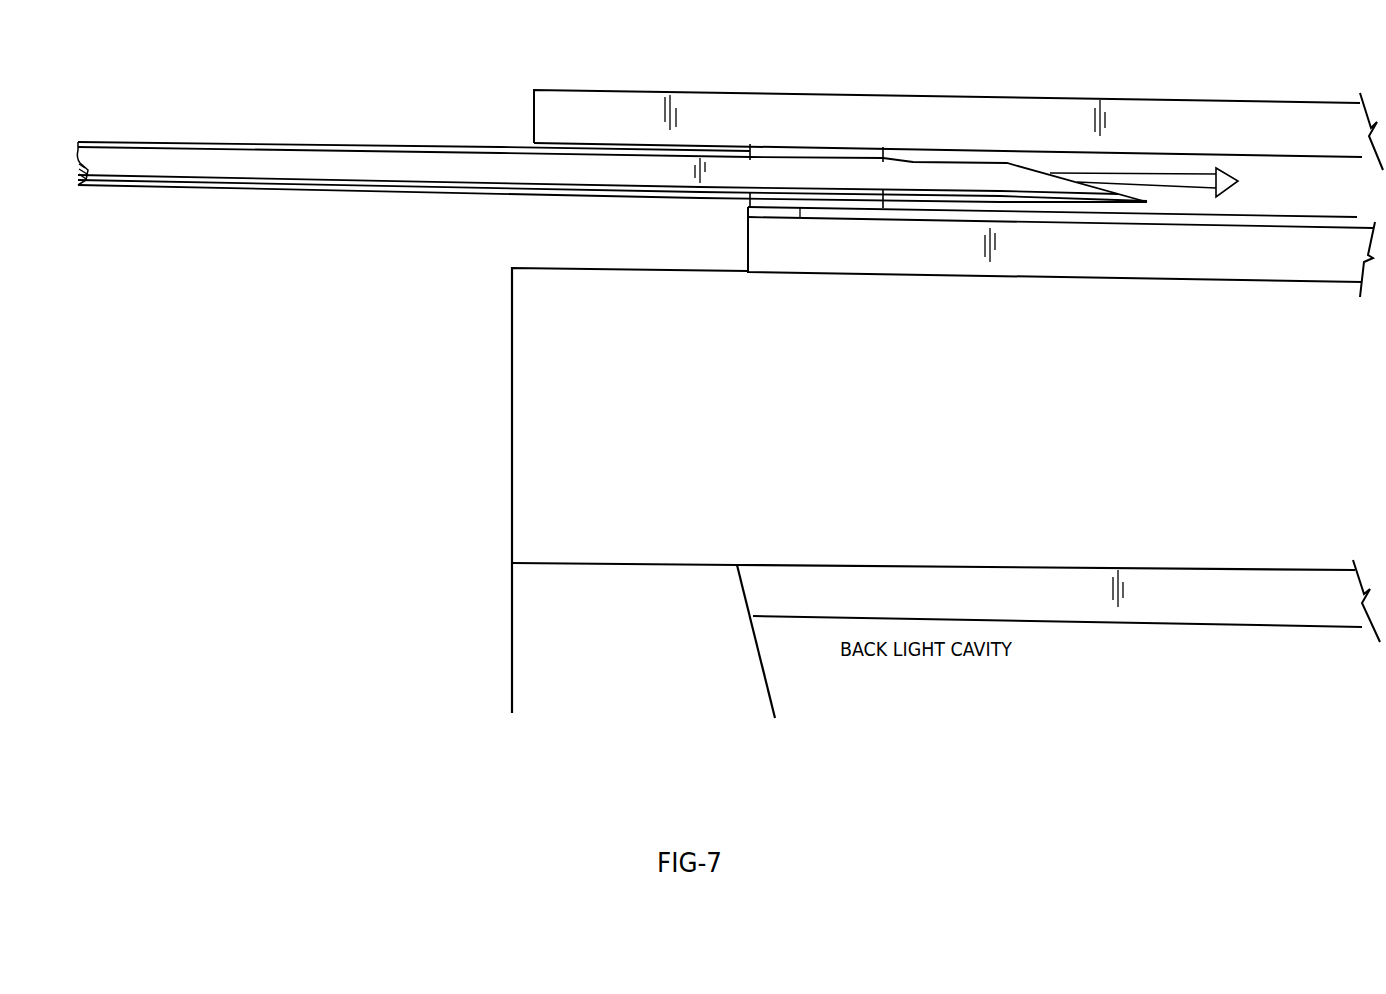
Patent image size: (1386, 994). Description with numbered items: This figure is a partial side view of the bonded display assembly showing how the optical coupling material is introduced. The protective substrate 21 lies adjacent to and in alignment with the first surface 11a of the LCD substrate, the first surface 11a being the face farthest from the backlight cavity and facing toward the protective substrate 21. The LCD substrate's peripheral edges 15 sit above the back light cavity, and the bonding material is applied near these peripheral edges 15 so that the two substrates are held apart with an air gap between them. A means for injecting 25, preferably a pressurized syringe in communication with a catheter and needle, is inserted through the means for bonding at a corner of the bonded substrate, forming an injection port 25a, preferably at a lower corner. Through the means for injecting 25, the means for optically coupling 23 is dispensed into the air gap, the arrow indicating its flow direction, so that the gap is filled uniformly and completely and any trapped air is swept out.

The protective substrate 21 is at (985, 97).
The means for injecting 25 is at (320, 176).
The means for optically coupling 23 is at (1238, 181).
The injection port 25a is at (512, 268).
The peripheral edges 15 is at (1183, 262).
The first surface 11a is at (1303, 224).